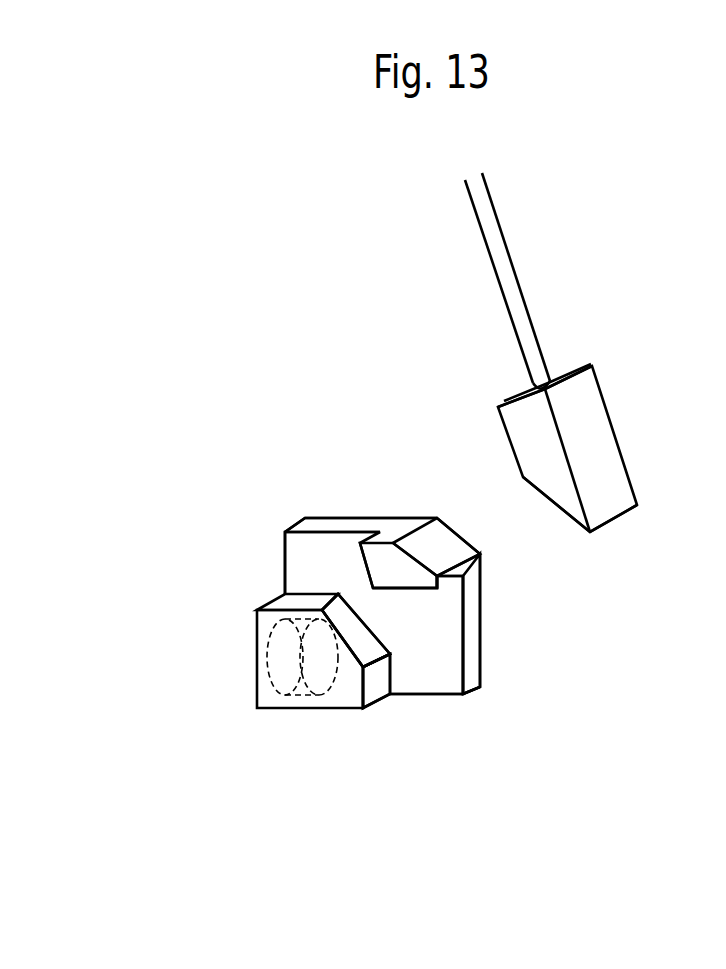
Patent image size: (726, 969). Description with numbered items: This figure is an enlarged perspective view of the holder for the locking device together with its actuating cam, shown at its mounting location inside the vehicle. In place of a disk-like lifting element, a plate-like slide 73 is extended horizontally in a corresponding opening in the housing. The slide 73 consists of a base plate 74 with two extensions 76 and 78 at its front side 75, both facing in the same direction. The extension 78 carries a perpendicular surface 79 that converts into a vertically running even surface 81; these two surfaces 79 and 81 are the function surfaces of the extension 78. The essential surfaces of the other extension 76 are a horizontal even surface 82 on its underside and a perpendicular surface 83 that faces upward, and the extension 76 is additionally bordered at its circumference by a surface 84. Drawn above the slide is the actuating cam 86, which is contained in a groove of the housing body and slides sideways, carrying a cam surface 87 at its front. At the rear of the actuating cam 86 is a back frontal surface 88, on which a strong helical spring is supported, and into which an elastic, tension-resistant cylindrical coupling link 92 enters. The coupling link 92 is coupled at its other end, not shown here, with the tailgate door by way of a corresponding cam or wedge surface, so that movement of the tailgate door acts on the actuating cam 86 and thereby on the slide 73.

The slide 73 is at (326, 482).
The base plate 74 is at (472, 632).
The front side 75 is at (445, 673).
The extension 76 is at (390, 570).
The extension 78 is at (270, 722).
The perpendicular surface 79 is at (347, 621).
The vertically running even surface 81 is at (368, 680).
The horizontal even surface 82 is at (447, 588).
The perpendicular surface 83 is at (432, 552).
The surface 84 is at (283, 532).
The actuating cam 86 is at (588, 456).
The cam surface 87 is at (560, 508).
The back frontal surface 88 is at (570, 368).
The coupling link 92 is at (512, 304).